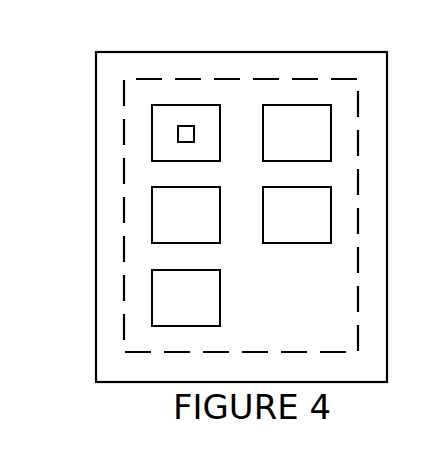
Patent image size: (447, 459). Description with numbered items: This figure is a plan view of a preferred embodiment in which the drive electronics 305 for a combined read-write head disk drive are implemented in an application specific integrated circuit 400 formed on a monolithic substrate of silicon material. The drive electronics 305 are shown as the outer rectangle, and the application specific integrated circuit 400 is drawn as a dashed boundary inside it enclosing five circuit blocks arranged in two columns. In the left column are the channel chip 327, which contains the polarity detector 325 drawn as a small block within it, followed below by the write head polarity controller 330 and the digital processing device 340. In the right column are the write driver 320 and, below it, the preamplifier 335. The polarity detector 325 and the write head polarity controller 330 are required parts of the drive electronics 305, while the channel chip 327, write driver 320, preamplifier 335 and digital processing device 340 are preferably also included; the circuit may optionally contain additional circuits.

The drive electronics 305 is at (242, 52).
The application specific integrated circuit 400 is at (283, 79).
The channel chip 327 is at (152, 132).
The polarity detector 325 is at (178, 143).
The write driver 320 is at (331, 130).
The write head polarity controller 330 is at (152, 212).
The preamplifier 335 is at (331, 212).
The digital processing device 340 is at (152, 299).